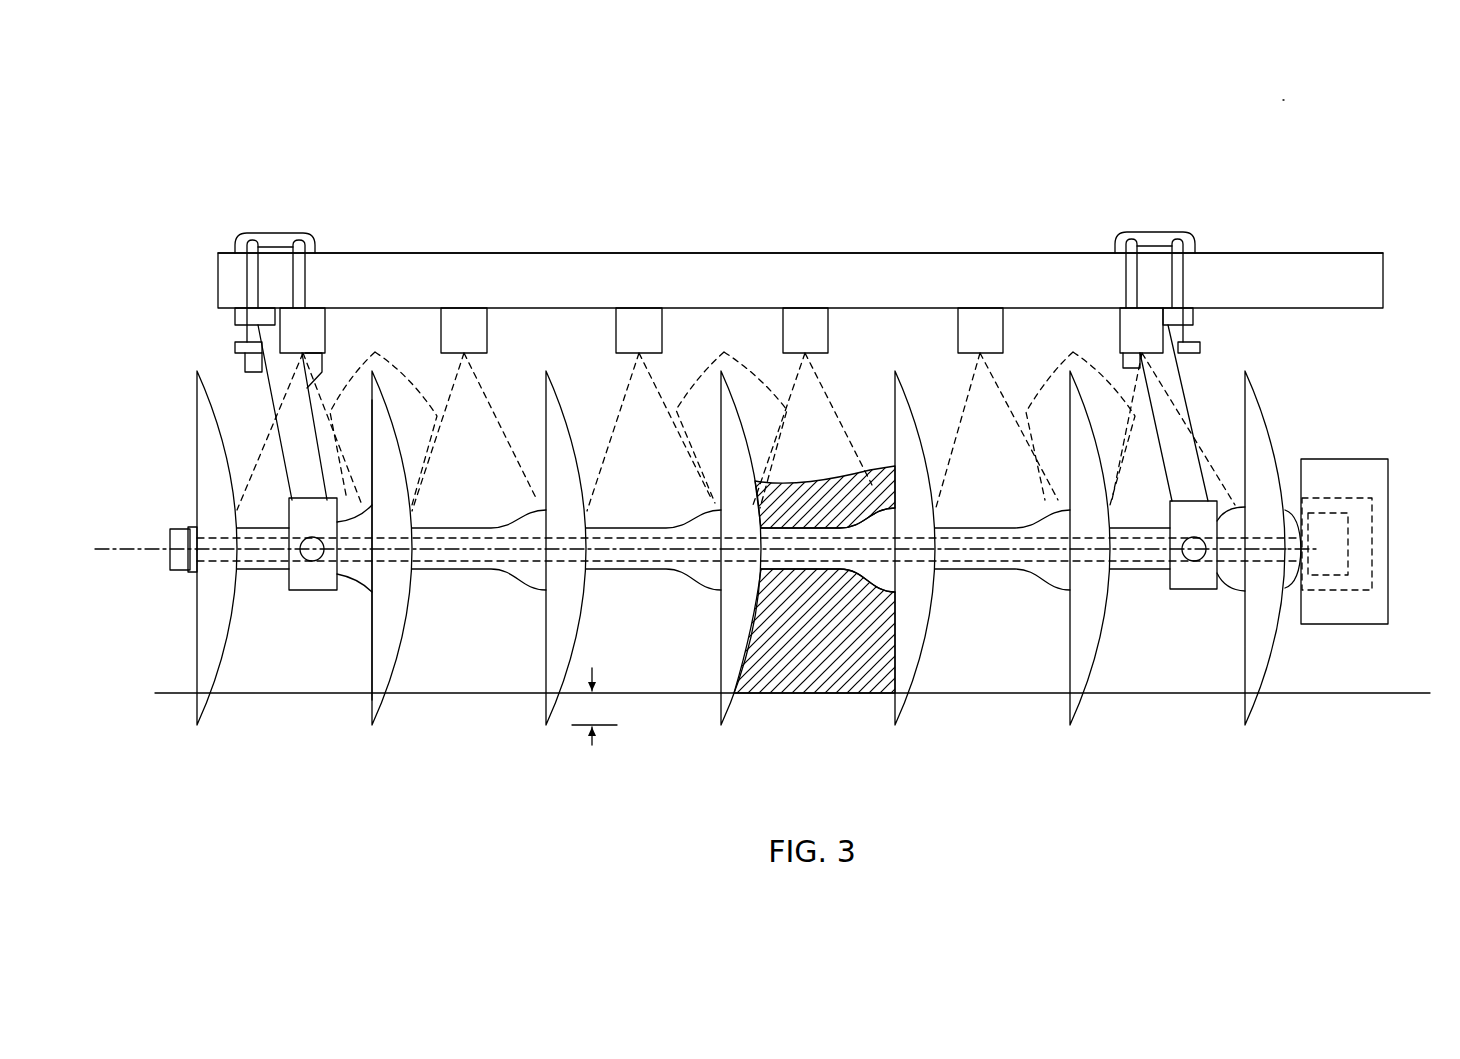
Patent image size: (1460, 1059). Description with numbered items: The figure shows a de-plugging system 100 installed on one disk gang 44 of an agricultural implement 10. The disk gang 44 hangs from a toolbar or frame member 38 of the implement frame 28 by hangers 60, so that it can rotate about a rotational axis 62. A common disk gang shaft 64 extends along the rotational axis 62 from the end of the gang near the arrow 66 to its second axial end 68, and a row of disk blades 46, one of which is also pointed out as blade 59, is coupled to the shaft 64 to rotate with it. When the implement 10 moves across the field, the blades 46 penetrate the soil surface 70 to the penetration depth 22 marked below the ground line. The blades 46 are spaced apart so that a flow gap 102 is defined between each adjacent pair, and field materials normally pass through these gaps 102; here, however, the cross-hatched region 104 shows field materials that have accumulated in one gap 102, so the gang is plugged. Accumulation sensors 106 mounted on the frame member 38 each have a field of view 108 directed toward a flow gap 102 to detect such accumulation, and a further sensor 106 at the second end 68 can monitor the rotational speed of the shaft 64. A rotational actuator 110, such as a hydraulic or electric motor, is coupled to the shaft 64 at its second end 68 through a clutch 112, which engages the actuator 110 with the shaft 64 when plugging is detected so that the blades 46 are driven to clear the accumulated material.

The agricultural implement 10 is at (1289, 96).
The system for de-plugging rotating ground engaging tools 100 is at (233, 203).
The accumulation sensor 106 is at (305, 330).
The implement frame 28 is at (1253, 246).
The frame member 38 is at (1355, 268).
The disk gang 44 is at (126, 338).
The hanger 60 is at (256, 364).
The field of view 108 is at (732, 413).
The disc gang 66 is at (168, 460).
The rotational axis 62 is at (140, 548).
The disk gang shaft 64 is at (263, 561).
The disc blade 59 is at (478, 572).
The disk blade 46 is at (197, 725).
The flow gap 102 is at (283, 653).
The cross-hatched region 104 is at (833, 491).
The second axial end 68 is at (1290, 458).
The rotational actuator 110 is at (1390, 547).
The clutch 112 is at (1333, 592).
The soil surface 70 is at (1315, 693).
The penetration depth 22 is at (595, 745).